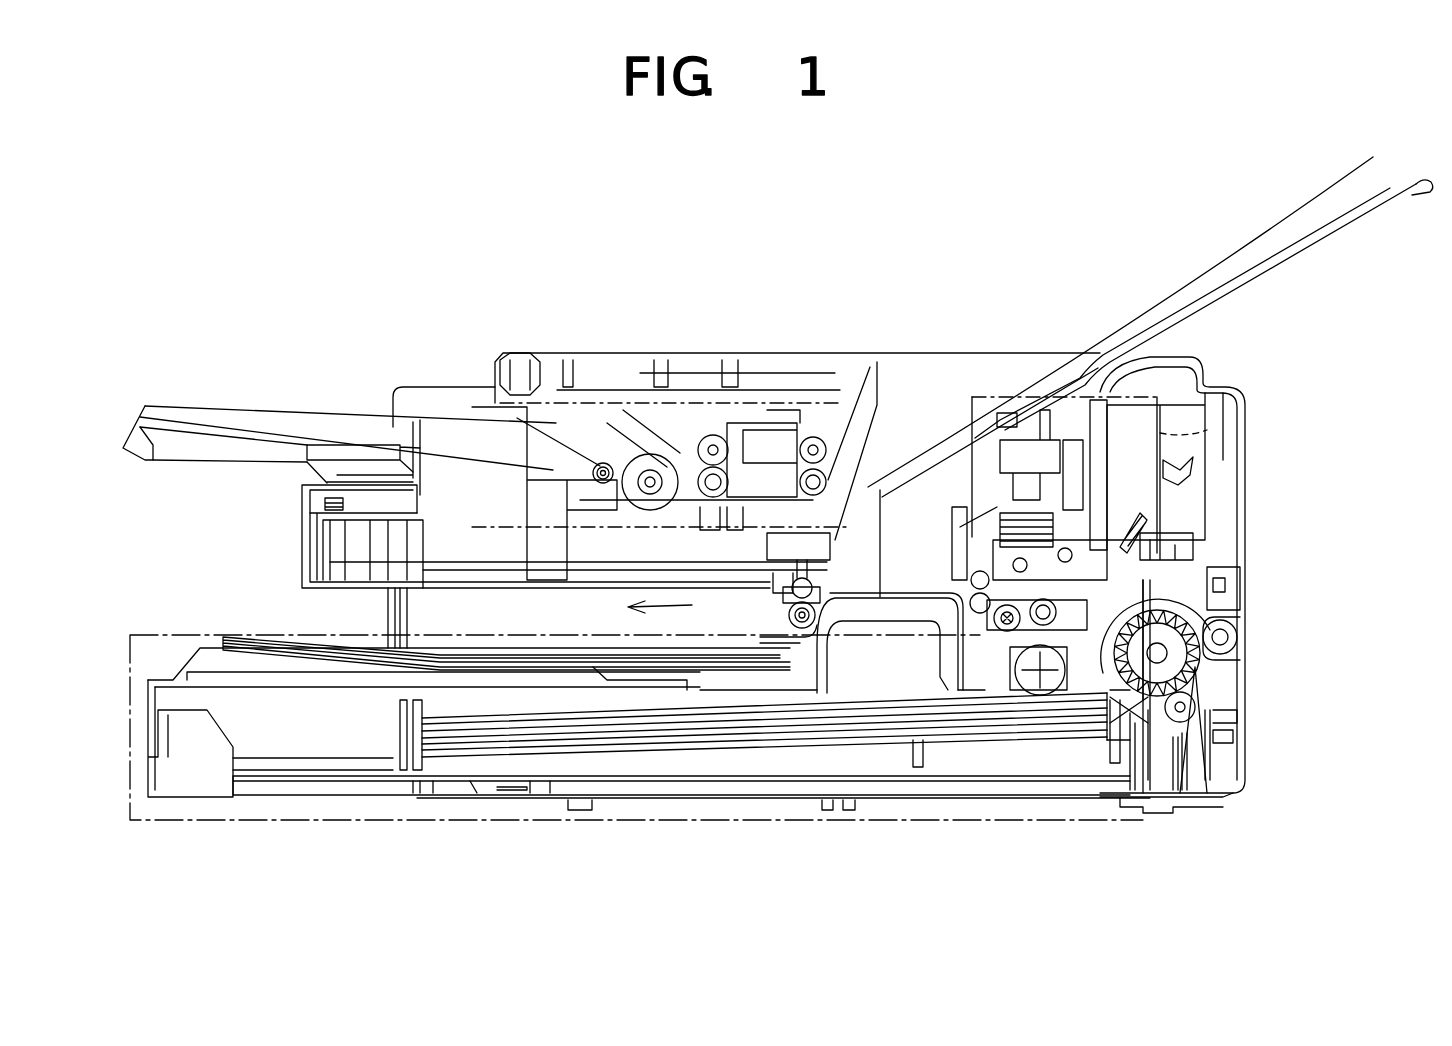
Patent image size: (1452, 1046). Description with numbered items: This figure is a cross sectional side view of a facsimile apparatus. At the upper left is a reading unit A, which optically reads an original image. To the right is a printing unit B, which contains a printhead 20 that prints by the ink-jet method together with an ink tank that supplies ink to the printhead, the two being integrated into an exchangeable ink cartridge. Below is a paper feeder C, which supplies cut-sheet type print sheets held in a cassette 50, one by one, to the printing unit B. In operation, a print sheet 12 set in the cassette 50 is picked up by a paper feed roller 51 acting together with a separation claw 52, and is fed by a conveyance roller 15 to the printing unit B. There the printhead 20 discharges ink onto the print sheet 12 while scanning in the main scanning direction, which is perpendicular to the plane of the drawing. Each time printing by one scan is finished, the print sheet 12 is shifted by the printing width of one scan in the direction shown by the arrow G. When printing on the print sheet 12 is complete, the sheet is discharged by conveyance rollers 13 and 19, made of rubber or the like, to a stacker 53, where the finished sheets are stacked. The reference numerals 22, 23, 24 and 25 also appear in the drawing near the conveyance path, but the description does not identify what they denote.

The reading unit A is at (472, 527).
The printing unit B is at (1207, 430).
The paper feeder C is at (982, 830).
The arrow G is at (692, 605).
The print sheet 12 is at (890, 740).
The conveyance roller 13 is at (778, 600).
The conveyance roller 15 is at (1173, 663).
The conveyance roller 19 is at (775, 622).
The printhead 20 is at (997, 430).
The conveying roller 22 is at (1105, 596).
The pinch roller 23 is at (1110, 602).
The upper discharge roller 24 is at (968, 580).
The lower discharge roller 25 is at (975, 615).
The cassette 50 is at (360, 773).
The paper feed roller 51 is at (1075, 655).
The separation claw 52 is at (1143, 713).
The stacker 53 is at (630, 667).